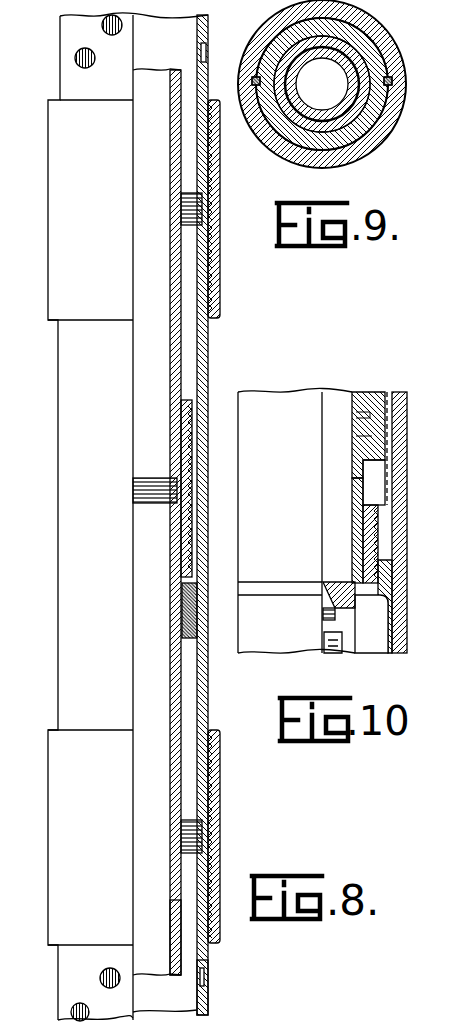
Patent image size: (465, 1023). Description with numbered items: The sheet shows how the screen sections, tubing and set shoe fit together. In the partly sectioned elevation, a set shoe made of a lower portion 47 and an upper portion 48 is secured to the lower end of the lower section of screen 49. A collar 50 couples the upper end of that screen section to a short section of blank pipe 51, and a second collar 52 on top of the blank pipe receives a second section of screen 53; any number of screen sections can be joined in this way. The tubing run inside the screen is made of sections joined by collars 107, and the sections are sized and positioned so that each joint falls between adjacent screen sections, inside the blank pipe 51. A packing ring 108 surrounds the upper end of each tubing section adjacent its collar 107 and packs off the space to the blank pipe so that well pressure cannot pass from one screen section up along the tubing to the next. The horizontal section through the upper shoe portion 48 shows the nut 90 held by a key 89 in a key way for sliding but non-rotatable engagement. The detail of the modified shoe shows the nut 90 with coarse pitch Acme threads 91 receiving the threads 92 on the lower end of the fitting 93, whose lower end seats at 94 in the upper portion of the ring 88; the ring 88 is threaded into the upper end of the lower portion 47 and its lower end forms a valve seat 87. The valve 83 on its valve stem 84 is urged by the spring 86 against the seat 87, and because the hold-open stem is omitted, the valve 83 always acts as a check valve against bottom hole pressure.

In FIG. 10, the lower portion of set shoe 47 is at (398, 652).
In FIG. 9, the upper portion of set shoe 48 is at (362, 147).
In FIG. 10, the upper portion of set shoe 48 is at (248, 507).
In FIG. 8, the lower section of screen 49 is at (203, 998).
In FIG. 8, the collar 50 is at (210, 843).
In FIG. 8, the short section of blank pipe 51 is at (208, 680).
In FIG. 8, the second collar 52 is at (213, 203).
In FIG. 8, the second section of screen 53 is at (209, 28).
In FIG. 10, the valve 83 is at (347, 620).
In FIG. 10, the valve stem 84 is at (320, 645).
In FIG. 10, the spring 86 is at (342, 654).
In FIG. 10, the valve seat 87 is at (338, 590).
In FIG. 10, the ring 88 is at (363, 558).
In FIG. 9, the key 89 is at (395, 98).
In FIG. 10, the key 89 is at (387, 392).
In FIG. 9, the nut 90 is at (372, 37).
In FIG. 10, the nut 90 is at (382, 393).
In FIG. 10, the Acme threads 91 is at (355, 422).
In FIG. 10, the threads 92 is at (363, 438).
In FIG. 9, the fitting 93 is at (266, 132).
In FIG. 10, the seat 94 is at (353, 530).
In FIG. 8, the collar 107 is at (186, 410).
In FIG. 8, the packing ring 108 is at (182, 608).